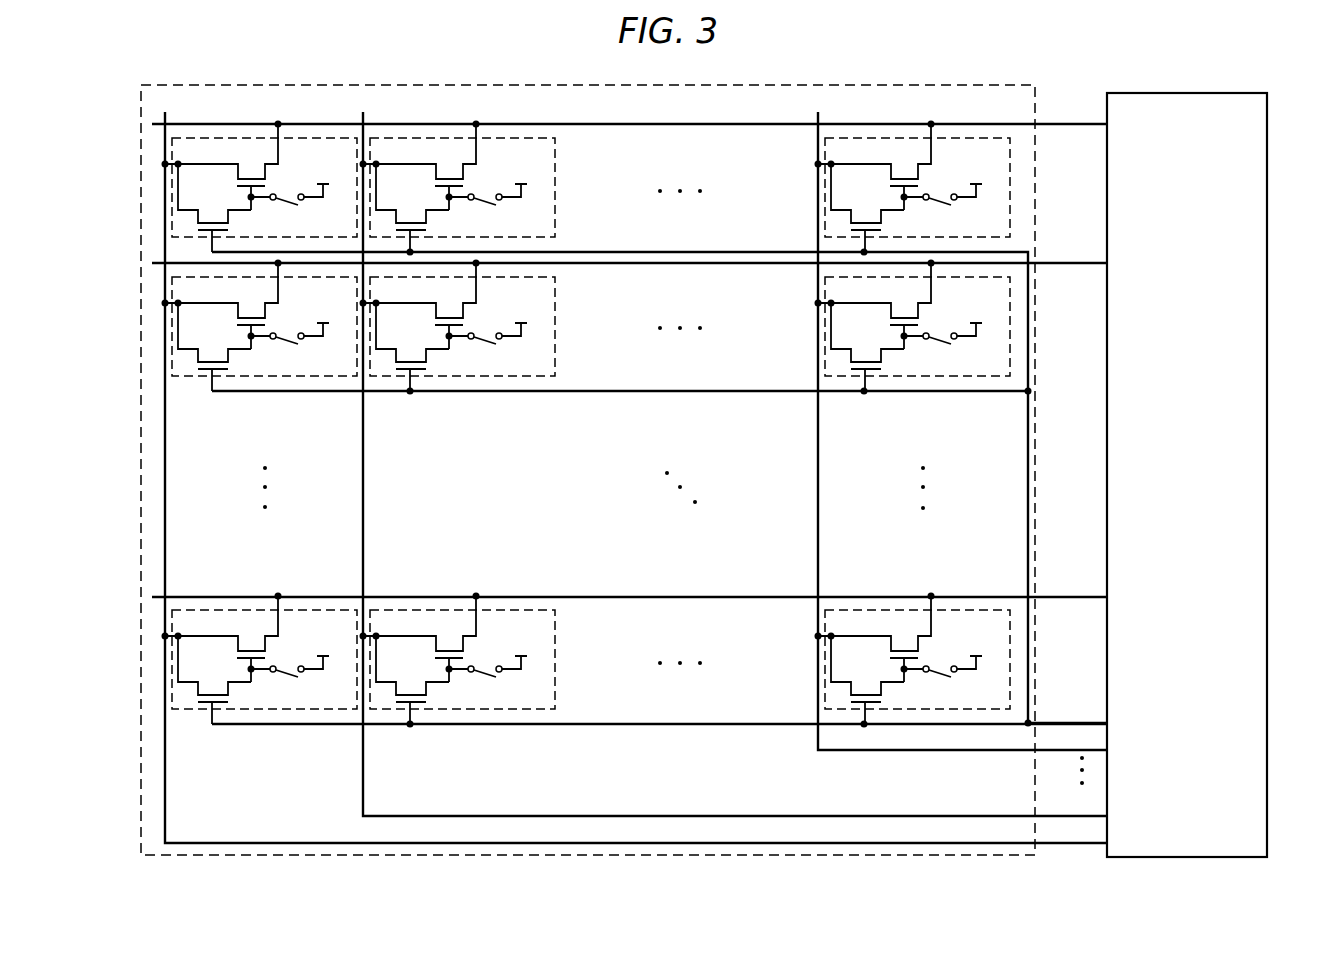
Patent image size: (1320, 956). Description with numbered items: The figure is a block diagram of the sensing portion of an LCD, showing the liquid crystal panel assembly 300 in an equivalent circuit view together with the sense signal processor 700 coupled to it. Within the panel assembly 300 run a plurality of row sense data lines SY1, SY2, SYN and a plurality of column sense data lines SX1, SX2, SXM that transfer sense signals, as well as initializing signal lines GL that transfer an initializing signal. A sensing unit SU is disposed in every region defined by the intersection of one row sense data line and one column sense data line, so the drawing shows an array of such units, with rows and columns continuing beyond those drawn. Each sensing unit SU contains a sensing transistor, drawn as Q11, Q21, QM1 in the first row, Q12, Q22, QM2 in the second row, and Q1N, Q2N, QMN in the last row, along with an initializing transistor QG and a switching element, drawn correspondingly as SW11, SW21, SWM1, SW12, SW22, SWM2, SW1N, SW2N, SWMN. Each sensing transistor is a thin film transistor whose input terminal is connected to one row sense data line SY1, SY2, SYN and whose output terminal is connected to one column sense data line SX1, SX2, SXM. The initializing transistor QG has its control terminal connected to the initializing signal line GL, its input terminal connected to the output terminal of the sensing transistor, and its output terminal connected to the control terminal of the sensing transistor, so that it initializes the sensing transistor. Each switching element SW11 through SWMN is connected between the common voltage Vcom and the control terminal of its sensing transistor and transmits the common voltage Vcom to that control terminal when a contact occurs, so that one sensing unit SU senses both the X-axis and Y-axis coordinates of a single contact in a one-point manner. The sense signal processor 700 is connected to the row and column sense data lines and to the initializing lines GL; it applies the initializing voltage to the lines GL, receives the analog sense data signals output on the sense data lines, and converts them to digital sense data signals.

The liquid crystal panel assembly 300 is at (599, 470).
The sense signal processor 700 is at (1267, 451).
The sensing unit SU is at (971, 610).
The initializing transistor QG is at (541, 444).
The common voltage Vcom is at (650, 410).
The sensing transistor Q11 is at (222, 159).
The sensing transistor Q21 is at (420, 159).
The sensing transistor QM1 is at (875, 159).
The sensing transistor Q12 is at (222, 298).
The sensing transistor Q22 is at (420, 298).
The sensing transistor QM2 is at (875, 298).
The sensing transistor Q1N is at (222, 631).
The sensing transistor Q2N is at (420, 631).
The sensing transistor QMN is at (875, 631).
The switching element SW11 is at (282, 215).
The switching element SW21 is at (480, 215).
The switching element SWM1 is at (935, 215).
The switching element SW12 is at (282, 354).
The switching element SW22 is at (480, 354).
The switching element SWM2 is at (935, 354).
The switching element SW1N is at (282, 687).
The switching element SW2N is at (480, 687).
The switching element SWMN is at (936, 687).
The row sense data line SY1 is at (629, 110).
The row sense data line SY2 is at (629, 244).
The row sense data line SYN is at (629, 586).
The column sense data line SX1 is at (636, 479).
The column sense data line SX2 is at (735, 465).
The column sense data line SXM is at (962, 433).
The initializing signal line GL is at (659, 488).